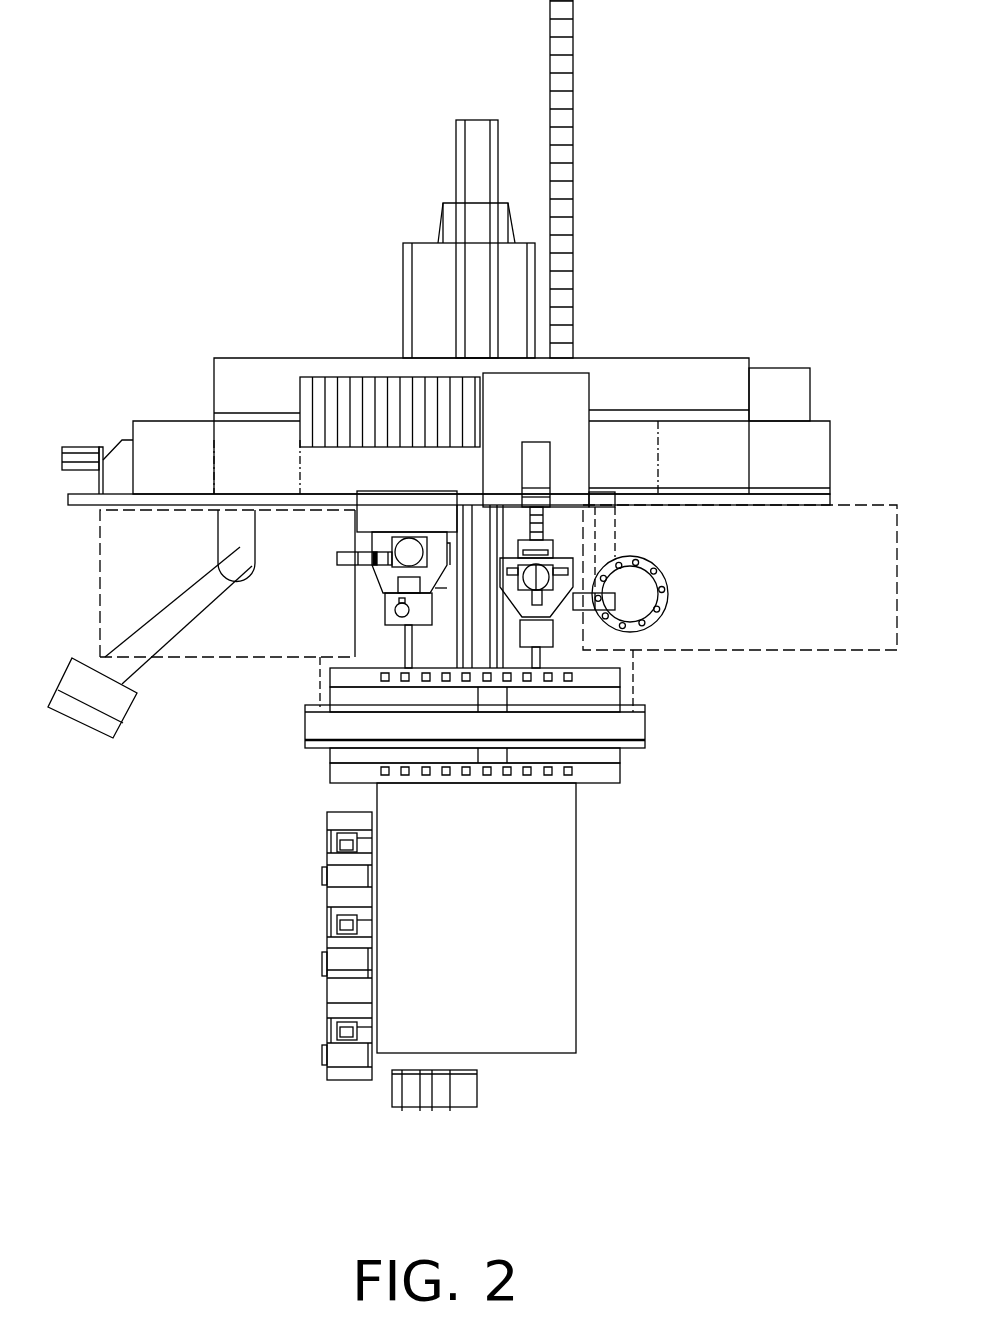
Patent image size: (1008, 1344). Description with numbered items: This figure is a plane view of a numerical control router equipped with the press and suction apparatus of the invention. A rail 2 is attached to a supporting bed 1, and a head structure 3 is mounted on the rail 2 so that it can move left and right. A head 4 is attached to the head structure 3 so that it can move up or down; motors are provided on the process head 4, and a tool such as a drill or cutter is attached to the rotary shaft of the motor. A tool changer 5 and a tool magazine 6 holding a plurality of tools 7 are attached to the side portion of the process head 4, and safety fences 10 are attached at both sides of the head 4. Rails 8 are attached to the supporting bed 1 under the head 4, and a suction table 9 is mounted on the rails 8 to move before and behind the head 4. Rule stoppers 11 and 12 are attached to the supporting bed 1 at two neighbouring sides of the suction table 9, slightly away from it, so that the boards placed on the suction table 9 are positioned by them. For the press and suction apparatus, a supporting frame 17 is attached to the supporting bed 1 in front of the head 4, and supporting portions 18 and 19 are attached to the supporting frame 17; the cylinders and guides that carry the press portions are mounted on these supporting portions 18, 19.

The supporting bed 1 is at (740, 363).
The rail 2 is at (762, 405).
The head structure 3 is at (573, 383).
The head 4 is at (543, 570).
The tool changer 5 is at (566, 600).
The tool magazine 6 is at (662, 610).
The tools 7 is at (665, 572).
The rails 8 is at (423, 268).
The suction table 9 is at (547, 1048).
The safety fences 10 is at (252, 658).
The rule stopper 11 is at (340, 990).
The rule stopper 12 is at (405, 1102).
The supporting frame 17 is at (637, 725).
The supporting portion 18 is at (607, 773).
The supporting portion 19 is at (347, 677).